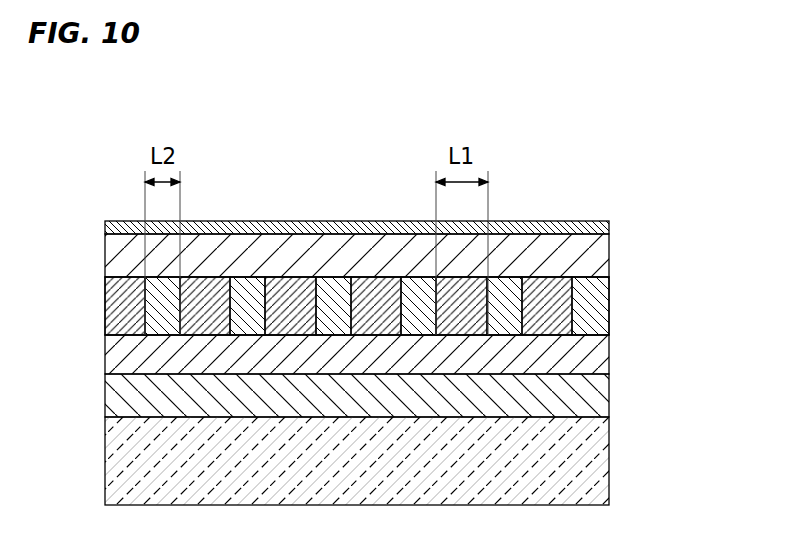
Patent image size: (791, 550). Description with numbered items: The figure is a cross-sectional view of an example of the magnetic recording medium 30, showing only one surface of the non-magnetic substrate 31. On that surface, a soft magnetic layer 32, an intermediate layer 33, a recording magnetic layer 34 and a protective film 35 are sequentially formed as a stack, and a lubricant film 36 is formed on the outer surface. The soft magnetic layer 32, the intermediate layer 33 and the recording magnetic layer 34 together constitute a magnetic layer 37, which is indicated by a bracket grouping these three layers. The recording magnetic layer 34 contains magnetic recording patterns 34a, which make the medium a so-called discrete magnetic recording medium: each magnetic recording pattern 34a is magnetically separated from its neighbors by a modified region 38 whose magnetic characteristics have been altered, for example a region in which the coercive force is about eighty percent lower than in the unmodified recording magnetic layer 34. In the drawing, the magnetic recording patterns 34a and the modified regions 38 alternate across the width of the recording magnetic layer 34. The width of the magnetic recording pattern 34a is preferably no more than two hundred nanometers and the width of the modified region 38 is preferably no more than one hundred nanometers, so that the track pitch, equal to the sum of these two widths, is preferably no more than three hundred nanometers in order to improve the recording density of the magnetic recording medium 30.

The magnetic recording medium 30 is at (266, 122).
The non-magnetic substrate 31 is at (598, 446).
The soft magnetic layer 32 is at (404, 395).
The intermediate layer 33 is at (598, 357).
The recording magnetic layer 34 is at (404, 233).
The magnetic recording pattern 34a is at (556, 277).
The protective film 35 is at (598, 259).
The lubricant film 36 is at (598, 227).
The magnetic layer 37 is at (435, 275).
The modified region 38 is at (500, 288).